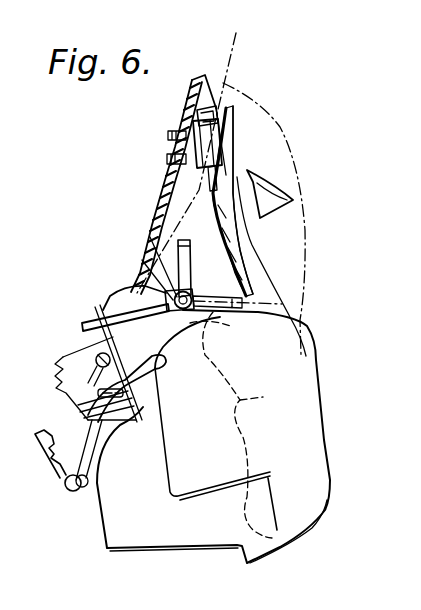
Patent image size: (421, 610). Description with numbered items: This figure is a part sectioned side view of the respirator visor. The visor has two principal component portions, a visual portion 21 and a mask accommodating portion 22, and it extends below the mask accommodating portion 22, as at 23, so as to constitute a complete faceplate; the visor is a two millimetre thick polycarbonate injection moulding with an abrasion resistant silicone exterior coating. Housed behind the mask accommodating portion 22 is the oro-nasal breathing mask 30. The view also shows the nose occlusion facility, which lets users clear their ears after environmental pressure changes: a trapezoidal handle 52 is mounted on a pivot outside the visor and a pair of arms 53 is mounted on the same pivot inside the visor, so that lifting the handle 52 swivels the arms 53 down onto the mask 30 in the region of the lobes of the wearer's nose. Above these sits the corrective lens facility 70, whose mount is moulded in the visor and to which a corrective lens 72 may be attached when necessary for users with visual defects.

The visual portion 21 is at (280, 170).
The mask accommodating portion 22 is at (137, 262).
The lower visor extension 23 is at (307, 503).
The oro-nasal breathing mask 30 is at (268, 272).
The trapezoidal handle 52 is at (87, 321).
The arms 53 is at (174, 254).
The corrective lens facility 70 is at (181, 128).
The corrective lens 72 is at (227, 145).